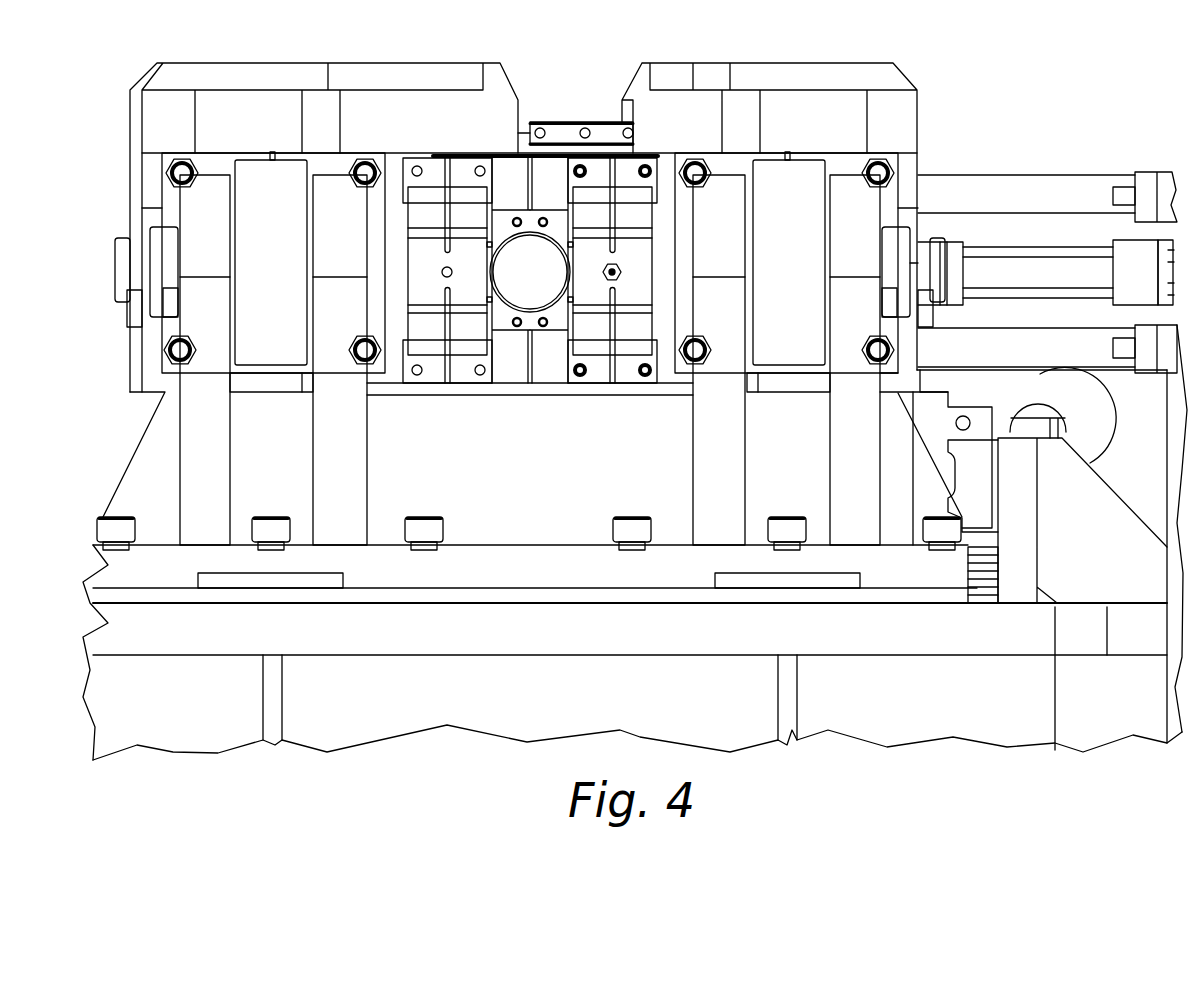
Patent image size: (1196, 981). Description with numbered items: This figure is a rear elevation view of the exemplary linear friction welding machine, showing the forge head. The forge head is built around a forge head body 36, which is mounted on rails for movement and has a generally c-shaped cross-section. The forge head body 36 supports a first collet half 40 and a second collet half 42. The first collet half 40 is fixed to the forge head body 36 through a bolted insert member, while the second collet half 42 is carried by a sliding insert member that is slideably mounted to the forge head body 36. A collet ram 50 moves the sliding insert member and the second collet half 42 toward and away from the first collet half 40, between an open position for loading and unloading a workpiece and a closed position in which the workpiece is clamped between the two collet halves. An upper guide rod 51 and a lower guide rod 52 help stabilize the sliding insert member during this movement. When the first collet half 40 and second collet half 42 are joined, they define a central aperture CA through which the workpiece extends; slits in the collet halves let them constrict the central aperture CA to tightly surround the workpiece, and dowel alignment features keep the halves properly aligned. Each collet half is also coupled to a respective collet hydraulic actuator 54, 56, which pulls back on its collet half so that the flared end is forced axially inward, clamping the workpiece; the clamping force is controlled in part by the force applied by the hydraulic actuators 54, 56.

The forge head body 36 is at (655, 112).
The first collet half 40 is at (498, 224).
The second collet half 42 is at (565, 225).
The central aperture CA is at (523, 272).
The collet ram 50 is at (1012, 272).
The upper guide rod 51 is at (1033, 192).
The lower guide rod 52 is at (1005, 343).
The collet hydraulic actuator 54 is at (473, 275).
The collet hydraulic actuator 56 is at (588, 275).